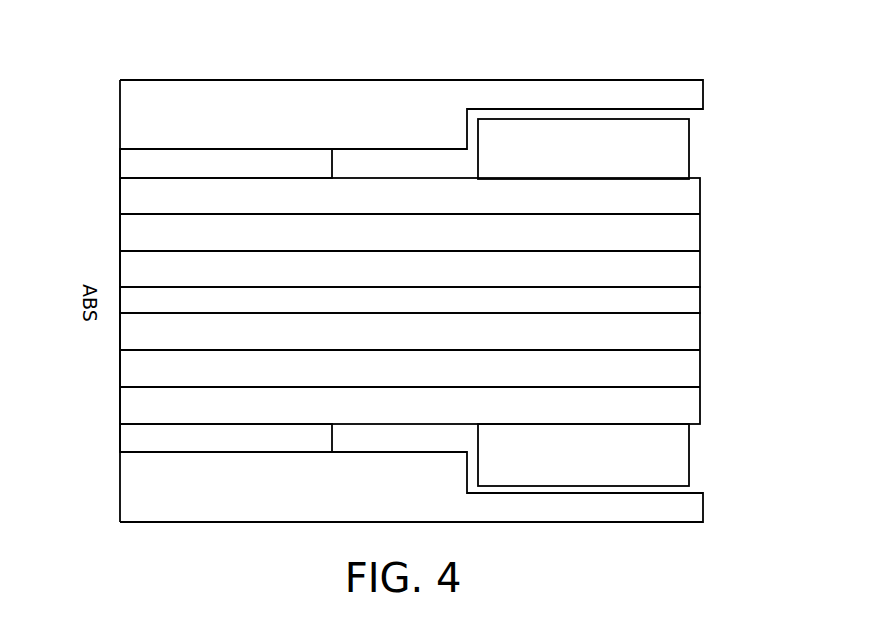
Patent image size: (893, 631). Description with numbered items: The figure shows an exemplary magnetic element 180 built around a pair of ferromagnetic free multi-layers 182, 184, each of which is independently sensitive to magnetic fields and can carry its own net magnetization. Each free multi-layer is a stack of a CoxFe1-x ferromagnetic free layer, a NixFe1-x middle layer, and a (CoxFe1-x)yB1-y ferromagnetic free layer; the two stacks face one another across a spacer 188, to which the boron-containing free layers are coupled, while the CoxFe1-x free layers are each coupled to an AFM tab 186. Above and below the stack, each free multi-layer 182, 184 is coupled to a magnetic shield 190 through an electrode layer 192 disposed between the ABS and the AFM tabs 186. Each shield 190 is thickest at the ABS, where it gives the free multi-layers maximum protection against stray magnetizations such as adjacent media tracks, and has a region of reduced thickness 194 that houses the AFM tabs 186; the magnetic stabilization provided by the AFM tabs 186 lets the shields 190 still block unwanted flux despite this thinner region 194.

The magnetic element 180 is at (108, 46).
The ferromagnetic free multi-layer 182 is at (708, 179).
The ferromagnetic free multi-layer 184 is at (708, 315).
The AFM tab 186 is at (583, 302).
The spacer 188 is at (410, 300).
The magnetic shield 190 is at (411, 301).
The electrode layer 192 is at (119, 165).
The region of reduced thickness 194 is at (467, 75).